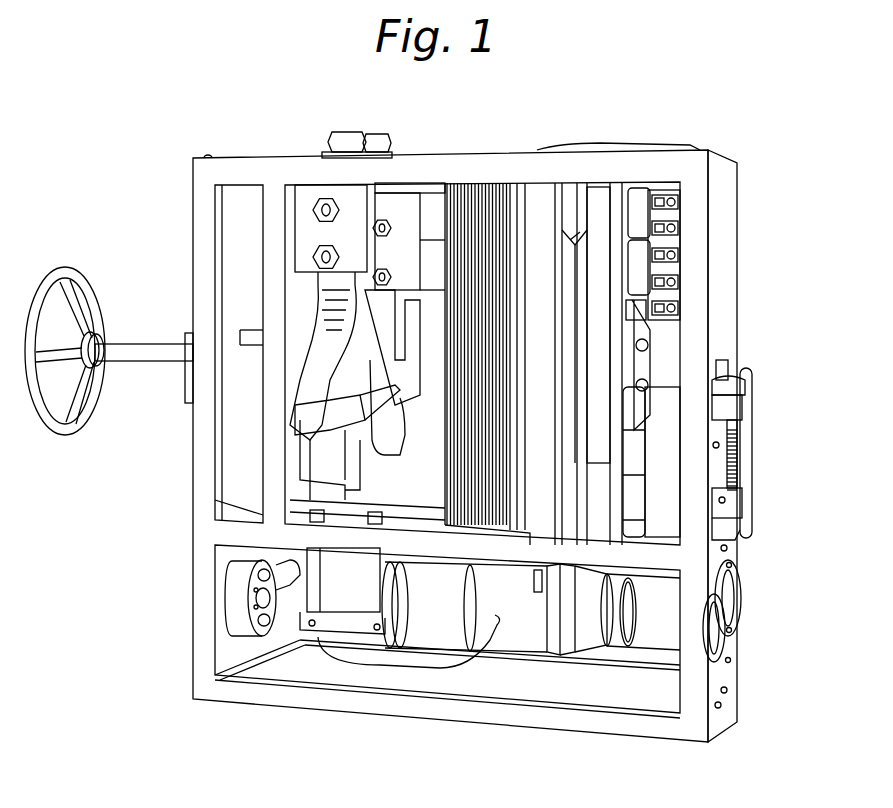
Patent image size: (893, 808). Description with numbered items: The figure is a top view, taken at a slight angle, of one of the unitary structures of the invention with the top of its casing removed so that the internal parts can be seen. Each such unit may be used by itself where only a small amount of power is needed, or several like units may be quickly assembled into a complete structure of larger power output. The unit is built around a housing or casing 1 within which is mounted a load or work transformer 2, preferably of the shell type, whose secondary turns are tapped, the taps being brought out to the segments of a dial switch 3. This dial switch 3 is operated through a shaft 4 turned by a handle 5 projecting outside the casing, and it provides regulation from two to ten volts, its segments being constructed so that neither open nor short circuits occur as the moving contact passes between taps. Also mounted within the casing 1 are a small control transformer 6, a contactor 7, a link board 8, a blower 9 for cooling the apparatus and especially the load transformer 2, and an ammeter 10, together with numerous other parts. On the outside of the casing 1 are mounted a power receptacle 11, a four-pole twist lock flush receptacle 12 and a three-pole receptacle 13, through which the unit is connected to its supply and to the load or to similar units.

The housing or casing 1 is at (205, 507).
The load or work transformer 2 is at (486, 183).
The dial switch 3 is at (362, 372).
The shaft 4 is at (163, 352).
The handle 5 is at (88, 425).
The control transformer 6 is at (340, 605).
The contactor 7 is at (668, 195).
The link board 8 is at (632, 330).
The blower 9 is at (587, 672).
The ammeter 10 is at (235, 602).
The power receptacle 11 is at (745, 445).
The four-pole twist lock flush receptacle 12 is at (735, 598).
The three-pole receptacle 13 is at (727, 636).